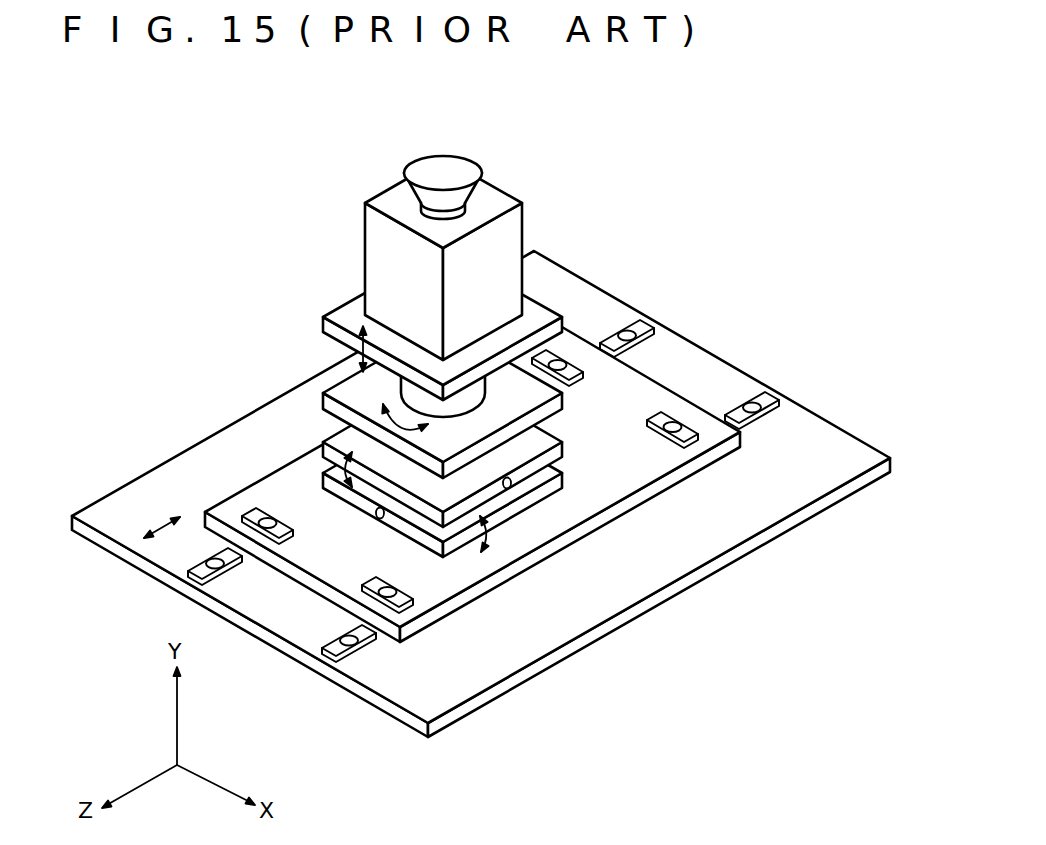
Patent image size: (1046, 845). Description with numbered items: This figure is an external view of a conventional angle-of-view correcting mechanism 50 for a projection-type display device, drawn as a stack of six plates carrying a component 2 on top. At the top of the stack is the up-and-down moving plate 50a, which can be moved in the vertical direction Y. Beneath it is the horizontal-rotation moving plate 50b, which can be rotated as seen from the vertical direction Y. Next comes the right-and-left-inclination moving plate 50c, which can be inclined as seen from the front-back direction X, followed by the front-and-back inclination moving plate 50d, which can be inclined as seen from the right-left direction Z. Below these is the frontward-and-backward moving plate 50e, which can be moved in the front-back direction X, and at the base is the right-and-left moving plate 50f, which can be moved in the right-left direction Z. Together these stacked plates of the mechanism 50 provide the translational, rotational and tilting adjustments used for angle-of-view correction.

The optical unit 2 is at (517, 237).
The angle-of-view correcting mechanism 50 is at (481, 463).
The up-and-down moving plate 50a is at (337, 306).
The horizontal-rotation moving plate 50b is at (338, 382).
The right-and-left-inclination moving plate 50c is at (325, 438).
The front-and-back inclination moving plate 50d is at (323, 471).
The frontward-and-backward moving plate 50e is at (262, 480).
The right-and-left moving plate 50f is at (202, 440).